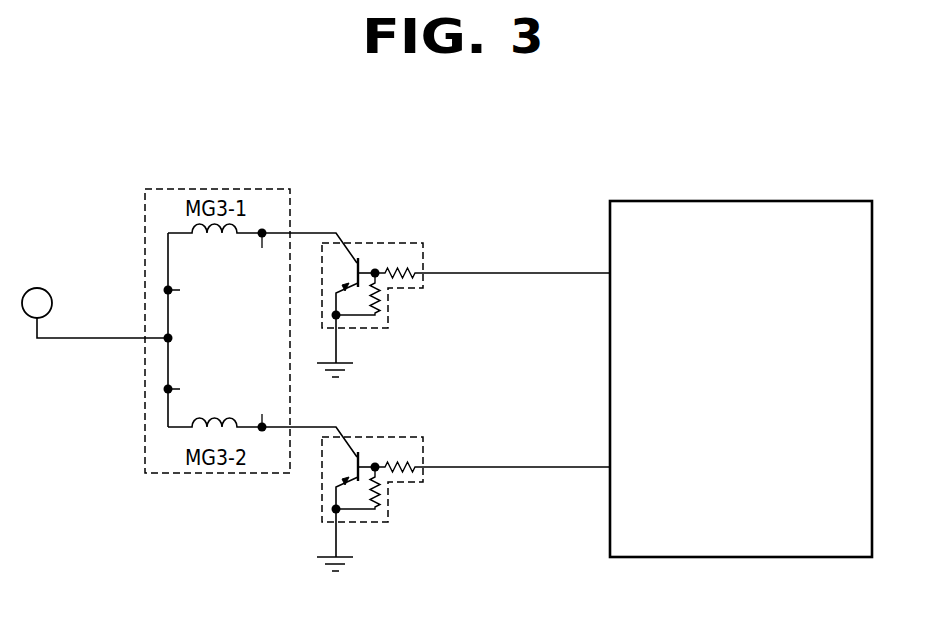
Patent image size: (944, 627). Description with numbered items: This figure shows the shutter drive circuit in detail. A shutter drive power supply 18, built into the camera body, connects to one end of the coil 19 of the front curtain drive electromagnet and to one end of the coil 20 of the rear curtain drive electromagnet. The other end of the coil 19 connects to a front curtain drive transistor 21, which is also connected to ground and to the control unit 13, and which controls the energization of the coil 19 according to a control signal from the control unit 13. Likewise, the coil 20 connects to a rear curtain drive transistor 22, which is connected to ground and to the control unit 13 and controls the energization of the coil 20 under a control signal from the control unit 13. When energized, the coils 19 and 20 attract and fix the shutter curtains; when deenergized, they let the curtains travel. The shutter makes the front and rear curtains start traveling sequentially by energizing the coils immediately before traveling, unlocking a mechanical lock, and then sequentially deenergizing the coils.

The control unit 13 is at (744, 201).
The shutter drive power supply 18 is at (38, 287).
The coil of front curtain drive electromagnet 19 is at (222, 240).
The coil of rear curtain drive electromagnet 20 is at (215, 416).
The front curtain drive transistor 21 is at (395, 242).
The rear curtain drive transistor 22 is at (378, 524).